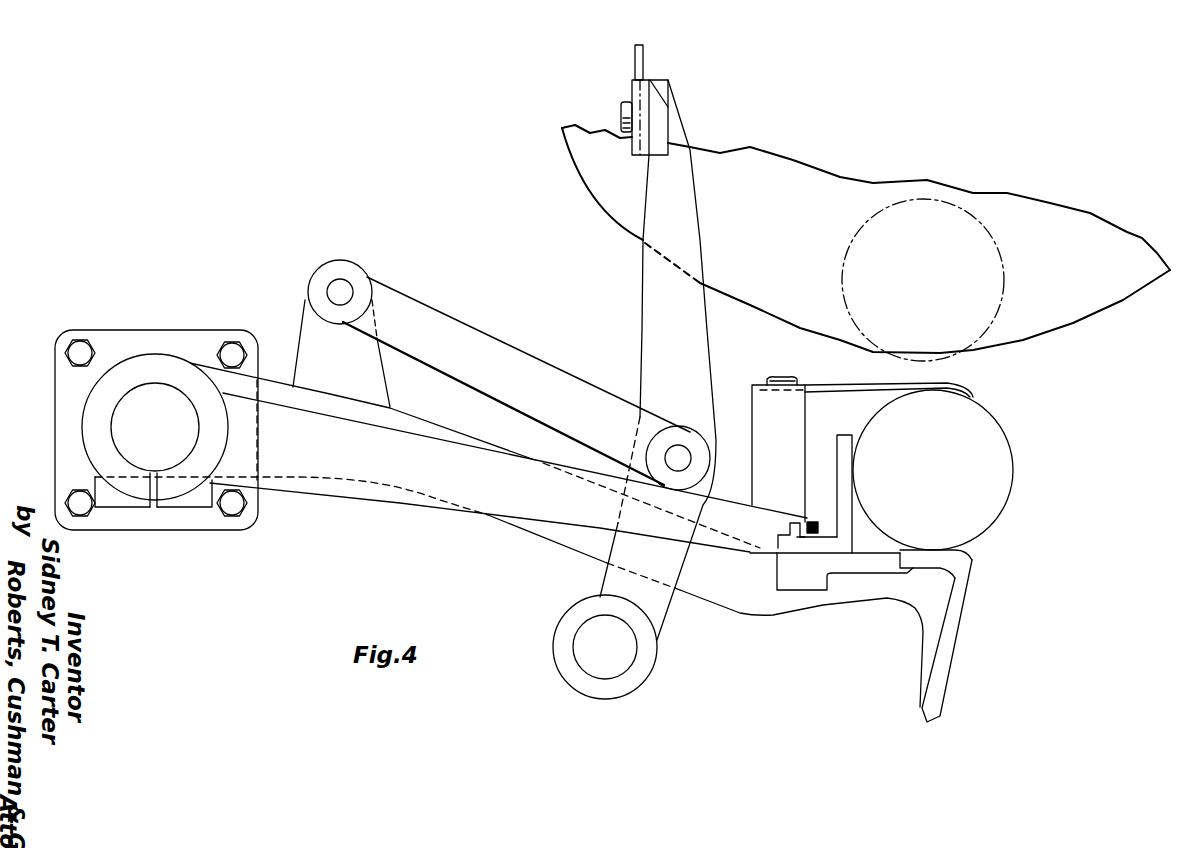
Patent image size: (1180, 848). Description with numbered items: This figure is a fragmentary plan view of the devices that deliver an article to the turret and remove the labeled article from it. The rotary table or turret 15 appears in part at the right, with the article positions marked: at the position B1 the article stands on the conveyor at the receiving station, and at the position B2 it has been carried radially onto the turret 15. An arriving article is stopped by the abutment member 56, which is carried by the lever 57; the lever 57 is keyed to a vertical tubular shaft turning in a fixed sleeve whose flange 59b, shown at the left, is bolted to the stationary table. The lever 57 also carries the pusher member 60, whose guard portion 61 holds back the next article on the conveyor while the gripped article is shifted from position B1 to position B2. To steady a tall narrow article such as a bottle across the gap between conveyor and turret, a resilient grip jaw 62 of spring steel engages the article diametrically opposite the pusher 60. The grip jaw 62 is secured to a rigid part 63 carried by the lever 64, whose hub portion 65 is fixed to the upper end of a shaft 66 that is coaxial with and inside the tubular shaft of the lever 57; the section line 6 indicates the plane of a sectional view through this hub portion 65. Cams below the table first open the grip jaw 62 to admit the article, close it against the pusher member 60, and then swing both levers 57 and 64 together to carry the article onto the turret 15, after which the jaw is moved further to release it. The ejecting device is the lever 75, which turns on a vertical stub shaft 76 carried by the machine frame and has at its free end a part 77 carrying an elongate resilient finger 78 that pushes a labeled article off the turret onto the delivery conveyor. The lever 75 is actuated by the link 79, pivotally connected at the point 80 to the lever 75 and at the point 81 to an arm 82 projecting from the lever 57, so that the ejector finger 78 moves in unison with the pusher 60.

The section line 6 is at (35, 402).
The rotary table or turret 15 is at (1067, 320).
The abutment member 56 is at (843, 505).
The lever 57 is at (727, 605).
The flange 59b is at (183, 523).
The pusher member 60 is at (953, 557).
The guard portion 61 is at (961, 641).
The grip jaw 62 is at (838, 367).
The rigid part 63 is at (760, 388).
The lever 64 is at (553, 512).
The hub portion 65 is at (138, 367).
The shaft 66 is at (155, 427).
The lever 75 is at (647, 263).
The vertical stub shaft 76 is at (600, 667).
The part 77 is at (657, 128).
The finger 78 is at (643, 55).
The link 79 is at (508, 360).
The point 80 is at (676, 450).
The point 81 is at (340, 288).
The bracket 82 is at (307, 325).
The position B1 is at (1007, 448).
The position B2 is at (980, 280).